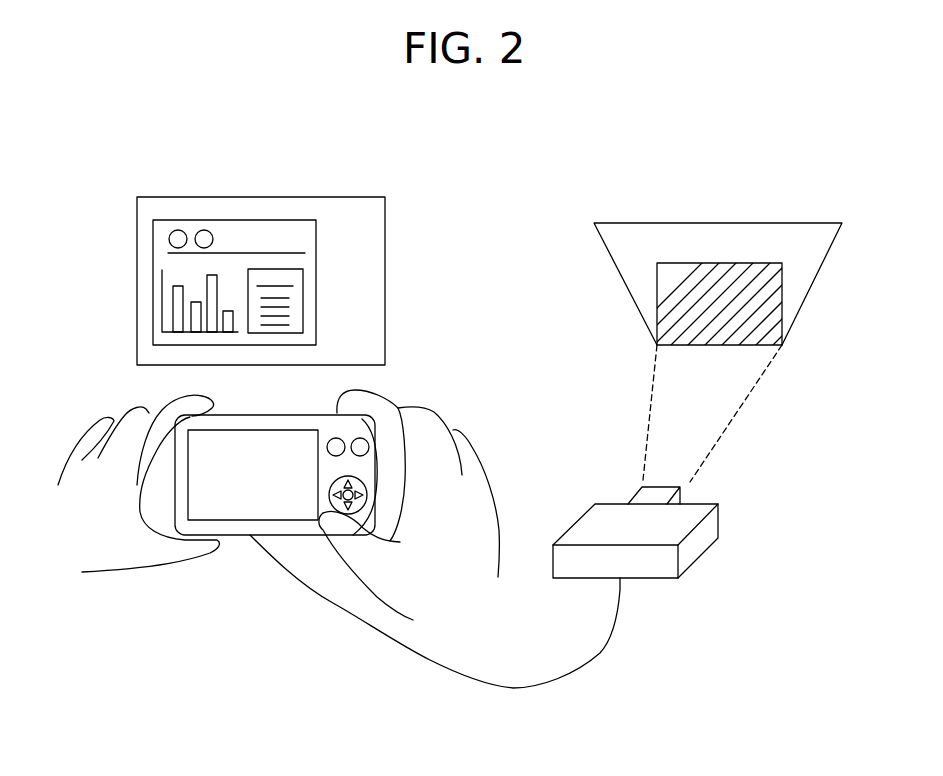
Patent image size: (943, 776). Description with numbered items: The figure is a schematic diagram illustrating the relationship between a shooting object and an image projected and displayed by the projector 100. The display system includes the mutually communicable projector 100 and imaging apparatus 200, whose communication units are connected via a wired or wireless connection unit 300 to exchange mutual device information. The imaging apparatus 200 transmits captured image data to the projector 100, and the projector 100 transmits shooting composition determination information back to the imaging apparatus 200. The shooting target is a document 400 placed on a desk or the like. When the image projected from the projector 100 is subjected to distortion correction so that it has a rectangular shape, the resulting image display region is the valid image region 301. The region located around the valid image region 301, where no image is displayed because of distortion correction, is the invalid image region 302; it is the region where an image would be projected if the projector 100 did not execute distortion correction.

The projector 100 is at (705, 547).
The imaging apparatus 200 is at (255, 415).
The connection unit 300 is at (562, 685).
The valid image region 301 is at (770, 313).
The invalid image region 302 is at (685, 227).
The document 400 is at (316, 275).